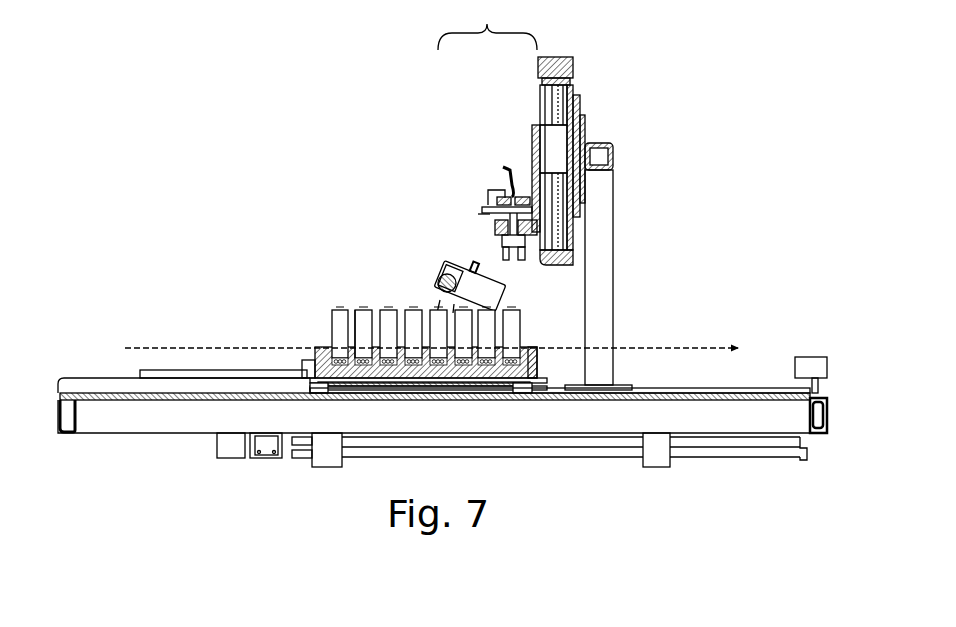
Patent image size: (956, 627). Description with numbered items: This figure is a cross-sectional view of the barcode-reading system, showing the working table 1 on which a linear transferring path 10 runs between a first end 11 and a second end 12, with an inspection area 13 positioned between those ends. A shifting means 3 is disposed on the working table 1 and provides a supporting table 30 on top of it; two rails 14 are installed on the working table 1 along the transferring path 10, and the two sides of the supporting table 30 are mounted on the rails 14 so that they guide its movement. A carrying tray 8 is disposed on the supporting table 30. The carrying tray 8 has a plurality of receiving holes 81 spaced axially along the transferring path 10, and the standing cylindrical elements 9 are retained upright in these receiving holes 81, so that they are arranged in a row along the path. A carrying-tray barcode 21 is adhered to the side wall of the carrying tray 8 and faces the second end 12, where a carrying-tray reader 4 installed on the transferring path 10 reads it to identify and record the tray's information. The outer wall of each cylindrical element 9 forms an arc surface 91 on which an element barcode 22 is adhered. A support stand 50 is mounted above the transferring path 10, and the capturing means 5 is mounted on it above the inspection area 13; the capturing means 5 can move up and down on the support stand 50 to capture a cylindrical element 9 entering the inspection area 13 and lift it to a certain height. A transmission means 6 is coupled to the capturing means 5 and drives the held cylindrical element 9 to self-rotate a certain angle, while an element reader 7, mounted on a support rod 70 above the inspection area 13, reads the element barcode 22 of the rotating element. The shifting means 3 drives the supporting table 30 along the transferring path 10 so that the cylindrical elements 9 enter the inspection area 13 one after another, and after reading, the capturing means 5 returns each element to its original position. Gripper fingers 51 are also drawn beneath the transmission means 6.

The working table 1 is at (163, 398).
The shifting means 3 is at (278, 460).
The carrying-tray reader 4 is at (812, 366).
The capturing means 5 is at (531, 127).
The transmission means 6 is at (482, 204).
The element reader 7 is at (458, 275).
The carrying tray 8 is at (317, 358).
The cylindrical elements 9 is at (330, 309).
The transferring path 10 is at (176, 347).
The first end 11 is at (84, 360).
The second end 12 is at (792, 343).
The inspection area 13 is at (487, 24).
The rails 14 is at (758, 391).
The carrying-tray barcode 21 is at (533, 362).
The element barcode 22 is at (304, 375).
The supporting table 30 is at (538, 388).
The support stand 50 is at (603, 199).
The gripper fingers 51 is at (507, 241).
The support rod 70 is at (437, 283).
The receiving holes 81 is at (336, 358).
The arc surface 91 is at (362, 328).